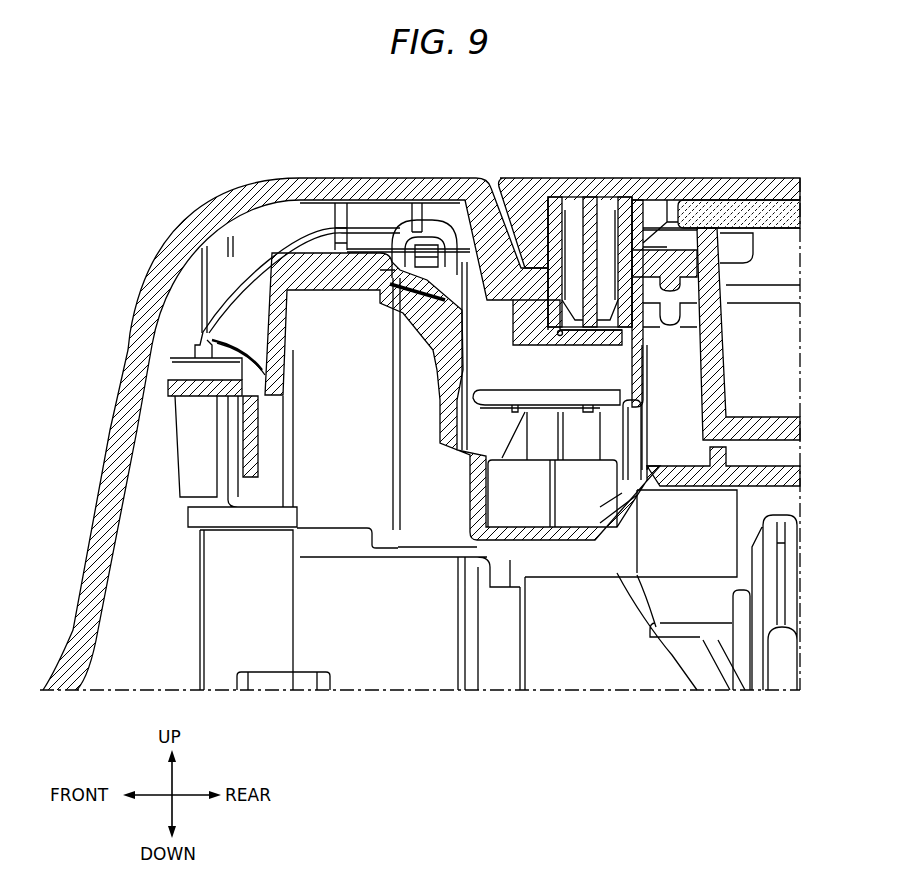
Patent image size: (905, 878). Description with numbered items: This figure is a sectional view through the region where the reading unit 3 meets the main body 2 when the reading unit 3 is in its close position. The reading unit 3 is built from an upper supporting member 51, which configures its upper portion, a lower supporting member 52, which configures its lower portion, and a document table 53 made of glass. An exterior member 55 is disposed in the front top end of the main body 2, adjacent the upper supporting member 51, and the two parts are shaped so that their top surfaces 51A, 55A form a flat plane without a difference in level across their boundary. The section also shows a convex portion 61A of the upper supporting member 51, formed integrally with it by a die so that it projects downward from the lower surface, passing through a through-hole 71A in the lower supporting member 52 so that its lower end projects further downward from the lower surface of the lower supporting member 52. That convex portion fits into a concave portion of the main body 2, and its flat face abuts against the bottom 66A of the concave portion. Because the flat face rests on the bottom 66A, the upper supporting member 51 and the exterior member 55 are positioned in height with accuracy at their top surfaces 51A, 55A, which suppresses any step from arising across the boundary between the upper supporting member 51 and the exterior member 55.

The main body 2 is at (582, 663).
The reading unit 3 is at (665, 401).
The upper supporting member 51 is at (698, 178).
The top surface 51A is at (517, 178).
The lower supporting member 52 is at (800, 412).
The document table 53 is at (800, 208).
The exterior member 55 is at (253, 185).
The top surface 55A is at (457, 178).
The engaging boss 61A is at (605, 270).
The bottom 66A is at (560, 336).
The projection 71A is at (530, 307).